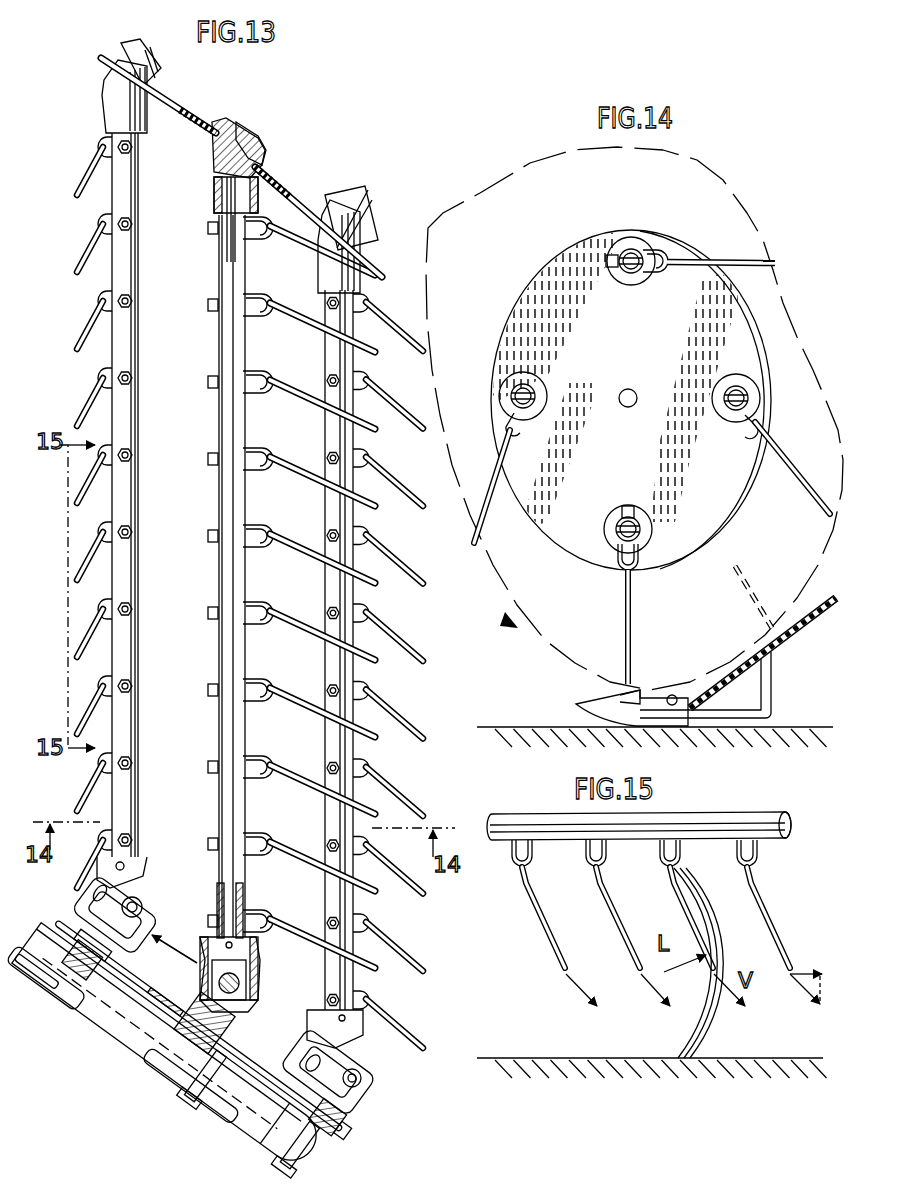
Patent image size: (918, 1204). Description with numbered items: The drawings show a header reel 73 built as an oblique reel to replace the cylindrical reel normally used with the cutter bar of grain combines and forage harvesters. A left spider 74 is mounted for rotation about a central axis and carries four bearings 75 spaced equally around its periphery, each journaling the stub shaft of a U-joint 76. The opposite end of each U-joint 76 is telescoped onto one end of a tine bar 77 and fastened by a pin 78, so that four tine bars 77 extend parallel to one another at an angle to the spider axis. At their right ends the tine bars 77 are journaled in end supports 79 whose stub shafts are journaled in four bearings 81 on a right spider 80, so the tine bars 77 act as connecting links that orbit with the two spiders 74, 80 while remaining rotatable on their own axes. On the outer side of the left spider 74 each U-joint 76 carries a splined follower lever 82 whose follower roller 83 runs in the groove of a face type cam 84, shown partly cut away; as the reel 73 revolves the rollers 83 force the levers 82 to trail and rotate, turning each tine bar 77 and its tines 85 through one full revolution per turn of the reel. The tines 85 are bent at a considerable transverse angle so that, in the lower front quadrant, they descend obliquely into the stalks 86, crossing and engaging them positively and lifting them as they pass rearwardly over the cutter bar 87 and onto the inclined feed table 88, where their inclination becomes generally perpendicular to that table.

In FIG. 13, the reel 73 is at (322, 118).
In FIG. 14, the reel 73 is at (540, 242).
In FIG. 13, the left spider 74 is at (350, 1121).
In FIG. 13, the bearing 75 is at (100, 980).
In FIG. 13, the U-joint 76 is at (86, 898).
In FIG. 13, the tine bar 77 is at (140, 786).
In FIG. 14, the tine bar 77 is at (608, 556).
In FIG. 15, the tine bar 77 is at (580, 854).
In FIG. 13, the pin 78 is at (134, 880).
In FIG. 13, the end support 79 is at (101, 110).
In FIG. 14, the end support 79 is at (645, 554).
In FIG. 13, the right spider 80 is at (168, 102).
In FIG. 14, the right spider 80 is at (522, 292).
In FIG. 13, the bearing 81 is at (118, 52).
In FIG. 13, the follower lever 82 is at (58, 931).
In FIG. 13, the follower roller 83 is at (70, 1010).
In FIG. 13, the face type cam 84 is at (213, 1113).
In FIG. 13, the tine 85 is at (92, 779).
In FIG. 14, the tine 85 is at (625, 651).
In FIG. 15, the tine 85 is at (546, 945).
In FIG. 15, the stalk 86 is at (708, 935).
In FIG. 14, the cutter bar 87 is at (592, 688).
In FIG. 14, the inclined feed table 88 is at (745, 665).